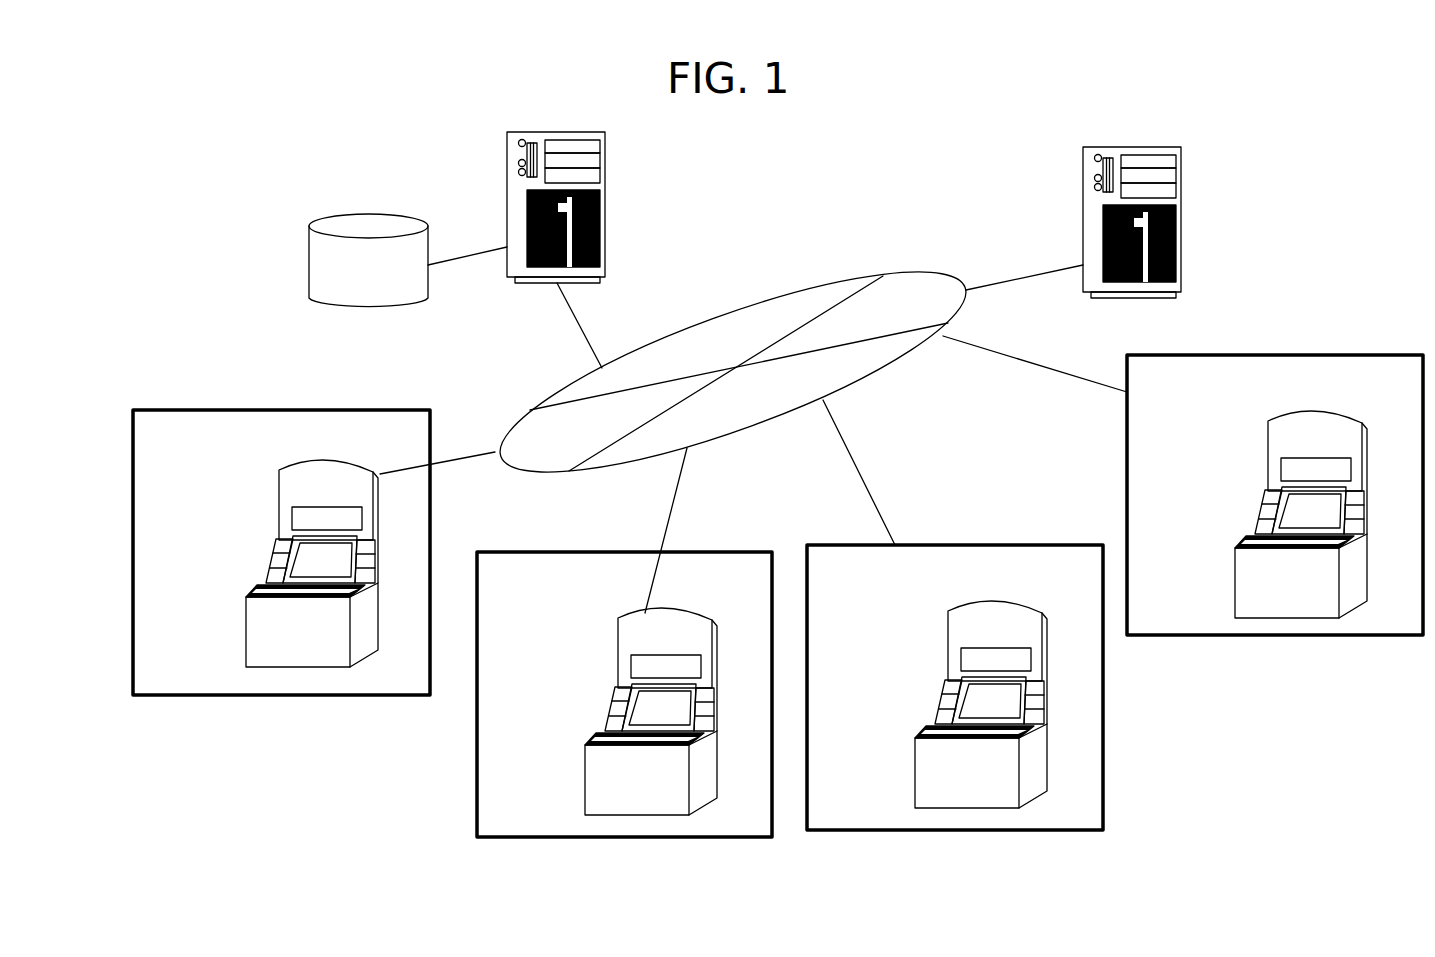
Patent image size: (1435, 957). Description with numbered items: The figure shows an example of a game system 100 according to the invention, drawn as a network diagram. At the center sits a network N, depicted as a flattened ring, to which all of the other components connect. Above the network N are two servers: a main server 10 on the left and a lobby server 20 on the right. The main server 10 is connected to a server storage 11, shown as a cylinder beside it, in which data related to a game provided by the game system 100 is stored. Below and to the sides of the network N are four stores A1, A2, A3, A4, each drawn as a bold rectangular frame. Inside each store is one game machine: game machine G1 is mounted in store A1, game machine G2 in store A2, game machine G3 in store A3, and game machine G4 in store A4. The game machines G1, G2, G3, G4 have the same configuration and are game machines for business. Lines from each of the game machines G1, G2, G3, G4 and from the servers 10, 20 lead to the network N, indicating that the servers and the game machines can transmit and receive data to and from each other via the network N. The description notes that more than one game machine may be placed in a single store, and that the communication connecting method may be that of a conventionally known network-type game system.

The game system 100 is at (252, 101).
The main server 10 is at (605, 240).
The server storage 11 is at (332, 218).
The lobby server 20 is at (1181, 258).
The network N is at (858, 388).
The store A1 is at (162, 411).
The store A2 is at (497, 552).
The store A3 is at (821, 544).
The store A4 is at (1190, 640).
The game machine G1 is at (278, 668).
The game machine G2 is at (672, 612).
The game machine G3 is at (946, 612).
The game machine G4 is at (1287, 618).